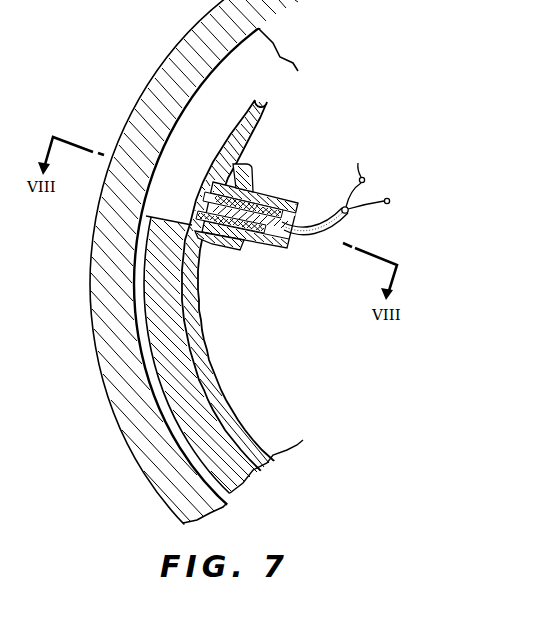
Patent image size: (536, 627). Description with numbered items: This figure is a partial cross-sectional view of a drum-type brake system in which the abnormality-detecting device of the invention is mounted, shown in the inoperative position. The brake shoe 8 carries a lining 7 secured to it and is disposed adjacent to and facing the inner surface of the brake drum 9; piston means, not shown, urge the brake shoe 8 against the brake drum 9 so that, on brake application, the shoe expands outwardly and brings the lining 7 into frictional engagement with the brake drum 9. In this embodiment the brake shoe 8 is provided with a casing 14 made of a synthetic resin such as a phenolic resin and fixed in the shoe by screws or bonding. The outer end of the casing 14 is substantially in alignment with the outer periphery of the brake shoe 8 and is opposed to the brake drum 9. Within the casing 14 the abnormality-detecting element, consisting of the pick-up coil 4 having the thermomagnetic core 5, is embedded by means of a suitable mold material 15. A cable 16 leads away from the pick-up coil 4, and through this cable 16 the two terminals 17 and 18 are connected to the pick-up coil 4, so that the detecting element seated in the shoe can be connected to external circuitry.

The pick-up coil 4 is at (273, 195).
The magnetic core 5 is at (252, 235).
The lining 7 is at (203, 395).
The brake shoe 8 is at (193, 315).
The brake drum 9 is at (100, 333).
The casing 14 is at (246, 180).
The mold material 15 is at (297, 236).
The cable 16 is at (344, 222).
The terminal 17 is at (360, 174).
The terminal 18 is at (390, 200).